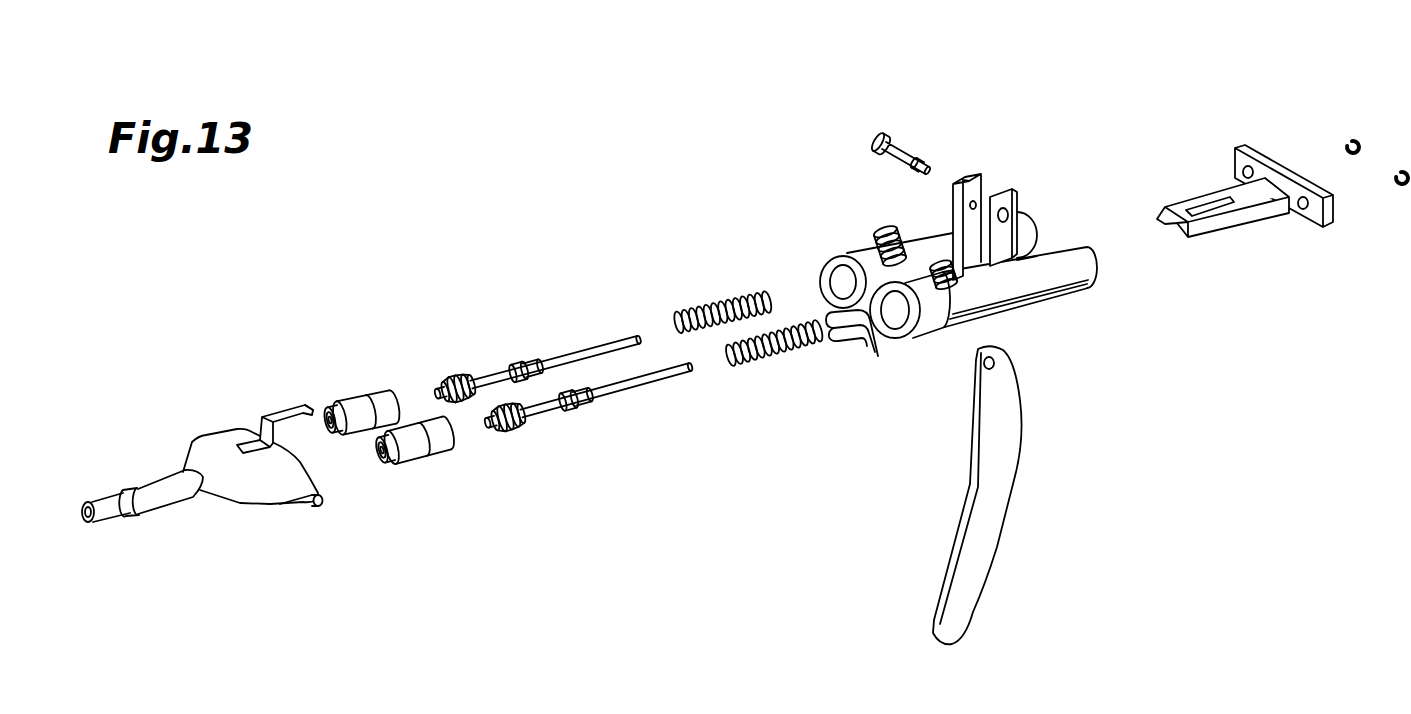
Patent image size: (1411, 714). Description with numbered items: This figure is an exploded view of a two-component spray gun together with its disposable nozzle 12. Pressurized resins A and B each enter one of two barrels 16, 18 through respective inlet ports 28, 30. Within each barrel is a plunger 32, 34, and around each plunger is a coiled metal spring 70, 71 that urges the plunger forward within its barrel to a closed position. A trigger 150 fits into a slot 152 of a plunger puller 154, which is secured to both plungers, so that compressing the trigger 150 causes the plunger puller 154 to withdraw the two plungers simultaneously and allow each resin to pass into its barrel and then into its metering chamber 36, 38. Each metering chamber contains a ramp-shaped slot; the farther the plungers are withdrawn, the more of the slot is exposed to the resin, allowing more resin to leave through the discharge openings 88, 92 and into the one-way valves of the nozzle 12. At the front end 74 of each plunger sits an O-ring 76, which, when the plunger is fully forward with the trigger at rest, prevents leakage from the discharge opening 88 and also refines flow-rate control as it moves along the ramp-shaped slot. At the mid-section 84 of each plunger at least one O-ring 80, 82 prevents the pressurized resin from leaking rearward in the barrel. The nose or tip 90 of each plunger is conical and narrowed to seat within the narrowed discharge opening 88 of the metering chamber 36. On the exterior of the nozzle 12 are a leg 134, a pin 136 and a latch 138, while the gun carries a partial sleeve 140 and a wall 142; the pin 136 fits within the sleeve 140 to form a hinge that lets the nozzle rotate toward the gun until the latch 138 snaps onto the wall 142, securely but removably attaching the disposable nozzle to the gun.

The nozzle 12 is at (138, 452).
The barrel 16 is at (1024, 255).
The barrel 18 is at (1058, 250).
The inlet port 28 is at (900, 246).
The inlet port 30 is at (940, 316).
The plunger 32 is at (539, 358).
The plunger 34 is at (592, 438).
The metering chamber 36 is at (361, 400).
The metering chamber 38 is at (440, 457).
The coiled metal spring 70 is at (690, 300).
The coiled metal spring 71 is at (737, 362).
The front end 74 is at (464, 380).
The O-ring 76 is at (448, 386).
The O-ring 80 is at (514, 362).
The O-ring 82 is at (533, 362).
The mid-section 84 is at (528, 380).
The discharge opening 88 is at (383, 458).
The nose/tip 90 is at (437, 386).
The discharge opening 92 is at (303, 400).
The leg 134 is at (300, 503).
The pin 136 is at (321, 506).
The latch 138 is at (277, 410).
The partial sleeve 140 is at (847, 341).
The wall 142 is at (833, 263).
The trigger 150 is at (1005, 487).
The slot 152 is at (1187, 212).
The plunger puller 154 is at (1245, 146).